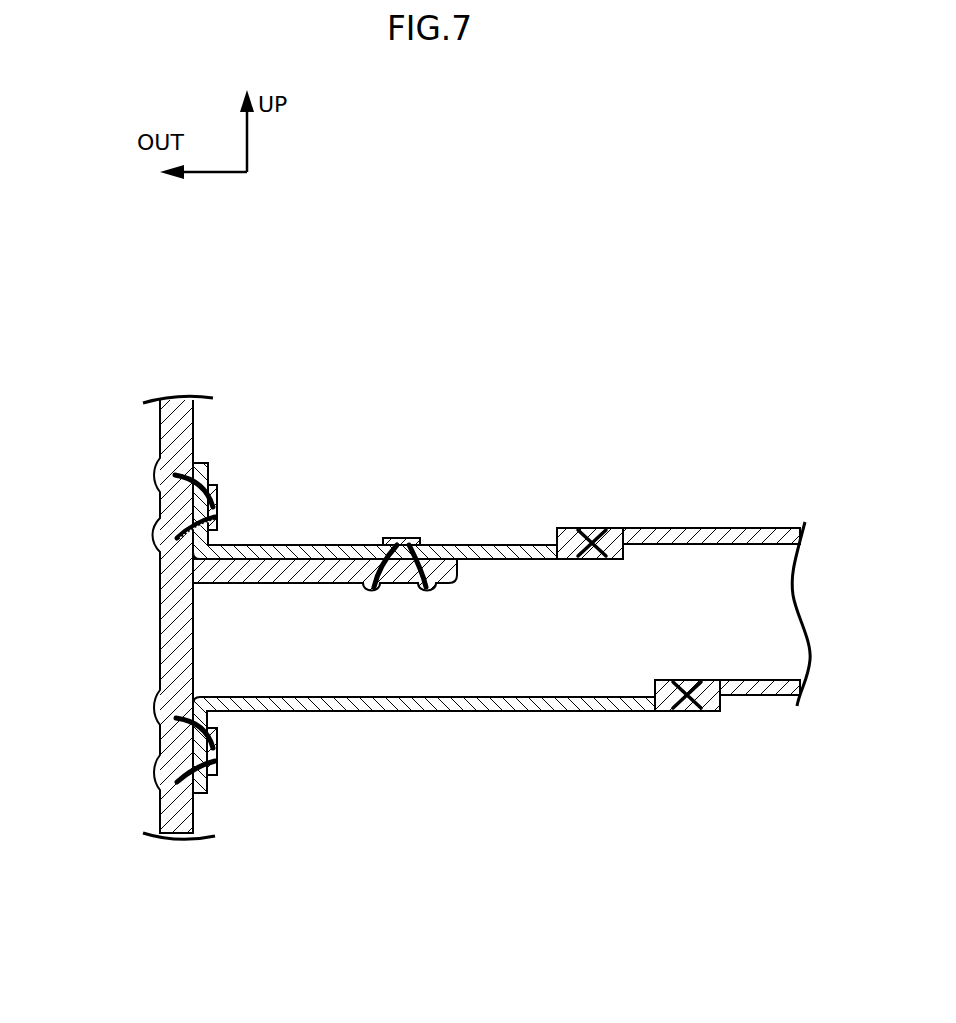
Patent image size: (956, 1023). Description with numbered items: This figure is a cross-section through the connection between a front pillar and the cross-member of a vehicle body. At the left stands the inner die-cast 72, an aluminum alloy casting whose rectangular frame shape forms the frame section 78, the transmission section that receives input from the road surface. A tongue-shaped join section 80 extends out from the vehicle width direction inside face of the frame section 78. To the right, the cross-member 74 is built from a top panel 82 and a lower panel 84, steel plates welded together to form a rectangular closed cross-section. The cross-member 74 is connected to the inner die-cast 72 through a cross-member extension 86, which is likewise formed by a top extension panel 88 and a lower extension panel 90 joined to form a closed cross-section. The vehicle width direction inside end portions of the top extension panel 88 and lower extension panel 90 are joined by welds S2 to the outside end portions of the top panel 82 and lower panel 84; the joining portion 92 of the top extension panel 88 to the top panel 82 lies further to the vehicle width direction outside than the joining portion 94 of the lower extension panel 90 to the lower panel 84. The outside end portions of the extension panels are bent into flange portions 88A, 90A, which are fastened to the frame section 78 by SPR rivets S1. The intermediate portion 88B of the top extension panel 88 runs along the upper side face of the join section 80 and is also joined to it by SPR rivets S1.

The inner die-cast 72 is at (157, 431).
The cross-member 74 is at (660, 494).
The frame section 78 is at (160, 613).
The join section 80 is at (288, 584).
The top panel 82 is at (730, 528).
The lower panel 84 is at (782, 680).
The cross-member extension 86 is at (511, 504).
The top extension panel 88 is at (330, 542).
The flange portion 88A is at (213, 470).
The intermediate portion 88B is at (357, 545).
The lower extension panel 90 is at (460, 714).
The flange portion 90A is at (215, 780).
The joining portion 92 is at (620, 528).
The joining portion 94 is at (665, 680).
The SPR rivets S1 is at (215, 507).
The welds S2 is at (592, 530).